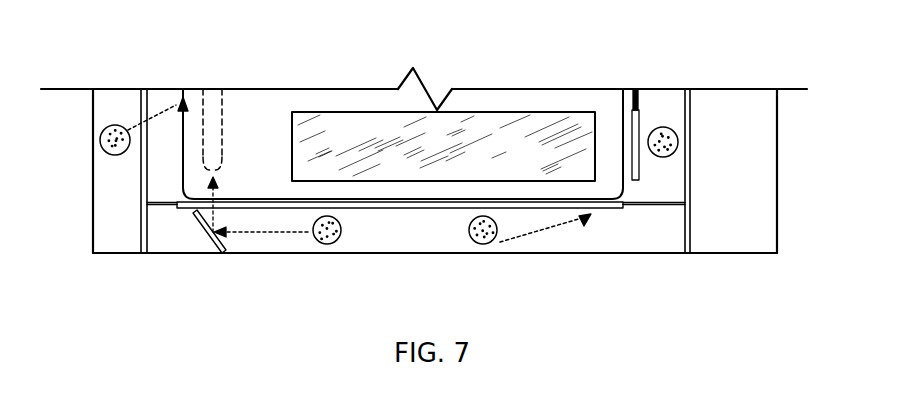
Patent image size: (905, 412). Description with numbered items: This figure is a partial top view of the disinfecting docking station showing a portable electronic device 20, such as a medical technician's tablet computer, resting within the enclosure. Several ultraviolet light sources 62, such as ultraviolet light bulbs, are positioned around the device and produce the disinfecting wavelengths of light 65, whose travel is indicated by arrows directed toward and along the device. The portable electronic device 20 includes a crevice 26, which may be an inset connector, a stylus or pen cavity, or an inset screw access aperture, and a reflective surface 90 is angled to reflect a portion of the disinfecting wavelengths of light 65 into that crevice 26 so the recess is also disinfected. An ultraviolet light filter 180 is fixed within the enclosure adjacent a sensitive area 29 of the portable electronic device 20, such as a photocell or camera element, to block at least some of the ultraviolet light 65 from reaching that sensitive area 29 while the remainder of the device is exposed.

The portable electronic device 20 is at (392, 193).
The crevice 26 is at (226, 179).
The sensitive area 29 is at (623, 147).
The ultraviolet light source 62 is at (113, 153).
The disinfecting wavelengths of light 65 is at (285, 237).
The reflective surface 90 is at (225, 242).
The ultraviolet light filter 180 is at (640, 122).